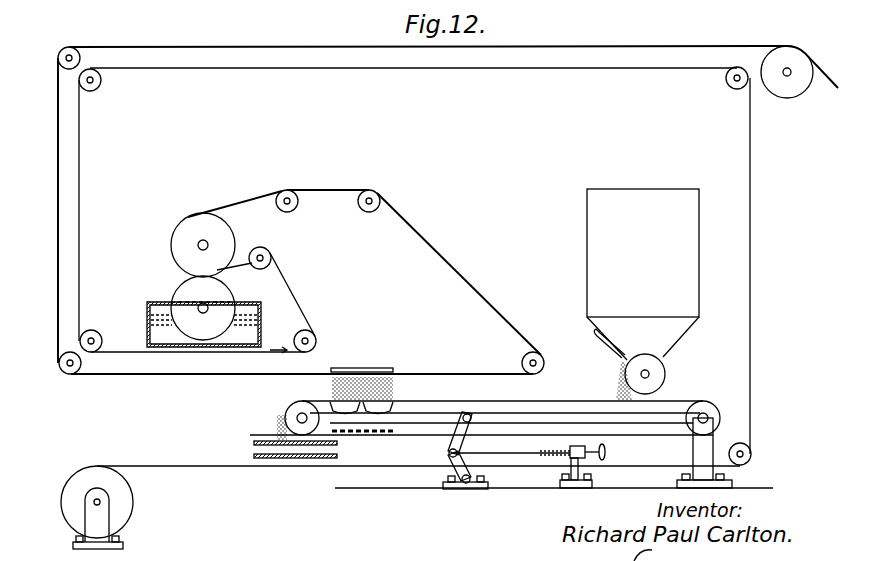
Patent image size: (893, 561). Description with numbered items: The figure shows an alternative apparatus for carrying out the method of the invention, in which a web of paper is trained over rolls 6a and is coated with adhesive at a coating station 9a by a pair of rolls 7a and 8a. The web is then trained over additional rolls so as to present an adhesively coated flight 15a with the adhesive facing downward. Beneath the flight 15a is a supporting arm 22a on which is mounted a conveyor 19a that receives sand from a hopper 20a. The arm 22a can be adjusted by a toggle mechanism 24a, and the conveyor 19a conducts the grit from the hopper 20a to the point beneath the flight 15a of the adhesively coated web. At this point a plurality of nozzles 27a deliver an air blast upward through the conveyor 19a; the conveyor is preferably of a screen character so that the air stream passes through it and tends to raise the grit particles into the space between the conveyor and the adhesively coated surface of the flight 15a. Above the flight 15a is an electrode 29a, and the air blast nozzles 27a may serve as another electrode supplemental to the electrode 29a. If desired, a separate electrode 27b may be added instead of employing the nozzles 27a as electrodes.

The rolls 6a is at (101, 84).
The coating roll 7a is at (233, 230).
The coating roll 8a is at (232, 295).
The coating station 9a is at (191, 278).
The adhesively coated flight 15a is at (447, 363).
The conveyor 19a is at (418, 437).
The hopper 20a is at (643, 294).
The supporting arm 22a is at (542, 430).
The toggle mechanism 24a is at (462, 487).
The nozzles 27a is at (378, 414).
The separate electrode 27b is at (383, 438).
The electrode 29a is at (365, 359).